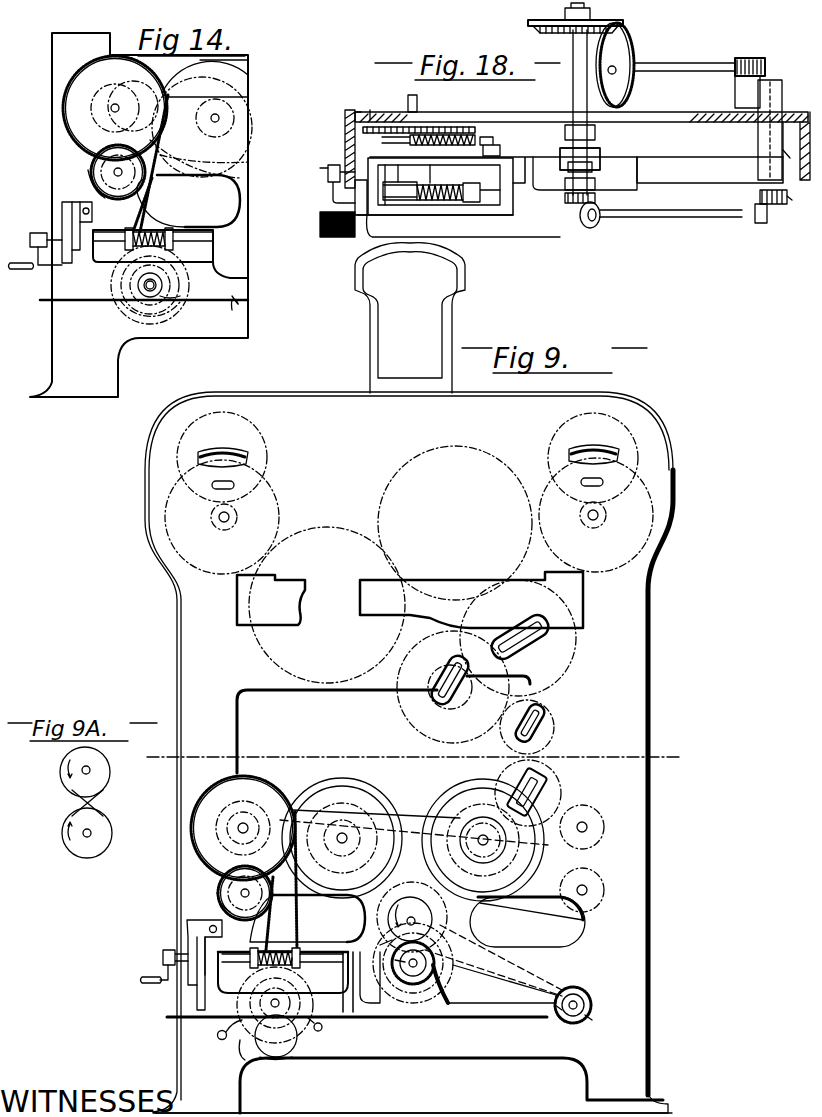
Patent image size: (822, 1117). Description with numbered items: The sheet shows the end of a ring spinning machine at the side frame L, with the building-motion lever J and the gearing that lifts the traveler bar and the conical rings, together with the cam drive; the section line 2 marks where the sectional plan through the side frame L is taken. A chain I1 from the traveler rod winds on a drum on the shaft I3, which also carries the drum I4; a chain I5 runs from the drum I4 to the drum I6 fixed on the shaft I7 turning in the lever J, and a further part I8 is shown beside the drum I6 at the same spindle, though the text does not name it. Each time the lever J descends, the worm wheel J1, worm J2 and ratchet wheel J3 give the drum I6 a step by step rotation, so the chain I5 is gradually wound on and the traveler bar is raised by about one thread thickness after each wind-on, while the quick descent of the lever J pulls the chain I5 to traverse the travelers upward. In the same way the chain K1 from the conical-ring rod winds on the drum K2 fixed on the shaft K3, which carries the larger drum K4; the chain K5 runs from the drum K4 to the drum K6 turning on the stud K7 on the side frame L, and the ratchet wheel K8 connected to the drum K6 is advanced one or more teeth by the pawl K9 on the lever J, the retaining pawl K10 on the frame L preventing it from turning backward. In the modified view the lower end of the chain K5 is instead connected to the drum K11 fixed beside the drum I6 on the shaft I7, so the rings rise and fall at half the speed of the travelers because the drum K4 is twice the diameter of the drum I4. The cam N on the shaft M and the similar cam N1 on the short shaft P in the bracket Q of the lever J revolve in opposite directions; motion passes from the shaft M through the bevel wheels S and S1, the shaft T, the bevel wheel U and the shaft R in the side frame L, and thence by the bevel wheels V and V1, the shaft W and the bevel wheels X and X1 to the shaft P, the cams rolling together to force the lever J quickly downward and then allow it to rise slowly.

In FIG. 14, the side frame L is at (139, 215).
In FIG. 9, the side frame L is at (409, 678).
In FIG. 9, the section line 2— 2 is at (412, 758).
In FIG. 14, the drum K4 is at (128, 75).
In FIG. 18, the drum K4 is at (372, 112).
In FIG. 9, the drum K4 is at (262, 782).
In FIG. 14, the drum K2 is at (110, 95).
In FIG. 9, the drum K2 is at (228, 818).
In FIG. 14, the shaft K3 is at (111, 108).
In FIG. 18, the shaft K3 is at (418, 98).
In FIG. 9, the shaft K3 is at (238, 832).
In FIG. 14, the shaft I3 is at (118, 172).
In FIG. 9, the shaft I3 is at (245, 893).
In FIG. 14, the drum I4 is at (92, 174).
In FIG. 9, the drum I4 is at (218, 895).
In FIG. 14, the chain K5 is at (160, 180).
In FIG. 9, the chain K5 is at (300, 917).
In FIG. 14, the chain I5 is at (148, 229).
In FIG. 9, the chain I5 is at (278, 945).
In FIG. 14, the worm J2 is at (172, 228).
In FIG. 18, the worm J2 is at (462, 185).
In FIG. 9, the worm J2 is at (282, 948).
In FIG. 14, the ratchet wheel J3 is at (66, 222).
In FIG. 9, the ratchet wheel J3 is at (186, 936).
In FIG. 18, the worm wheel J1 is at (481, 186).
In FIG. 9, the worm wheel J1 is at (246, 990).
In FIG. 14, the building-motion lever J is at (80, 300).
In FIG. 18, the building-motion lever J is at (577, 149).
In FIG. 9, the building-motion lever J is at (367, 1020).
In FIG. 14, the chain I1 is at (138, 280).
In FIG. 18, the drum I6 is at (440, 186).
In FIG. 9, the drum I6 is at (282, 985).
In FIG. 14, the shaft I7 is at (156, 285).
In FIG. 9, the shaft I7 is at (280, 1003).
In FIG. 14, the flange I8 is at (180, 300).
In FIG. 9, the chain K1 is at (276, 1036).
In FIG. 9, the drum K6 is at (232, 1056).
In FIG. 18, the stud K7 is at (448, 122).
In FIG. 18, the ratchet wheel K8 is at (428, 147).
In FIG. 9, the ratchet wheel K8 is at (295, 1060).
In FIG. 18, the pawl K9 is at (494, 138).
In FIG. 9, the pawl K9 is at (322, 1030).
In FIG. 18, the retaining pawl K10 is at (382, 140).
In FIG. 9, the retaining pawl K10 is at (222, 1040).
In FIG. 14, the drum K11 is at (128, 306).
In FIG. 18, the bevel wheel S is at (612, 16).
In FIG. 18, the bevel wheel S1 is at (630, 35).
In FIG. 9, the bevel wheel S1 is at (428, 880).
In FIG. 18, the shaft T is at (670, 60).
In FIG. 9, the shaft T is at (503, 960).
In FIG. 18, the bevel wheel U is at (767, 64).
In FIG. 18, the bevel wheel V is at (794, 199).
In FIG. 9, the bevel wheel V is at (593, 1024).
In FIG. 18, the bevel wheel V1 is at (782, 84).
In FIG. 9, the bevel wheel V1 is at (551, 1019).
In FIG. 18, the shaft M is at (572, 86).
In FIG. 9A, the shaft M is at (90, 770).
In FIG. 9, the shaft M is at (412, 917).
In FIG. 18, the cam N is at (598, 152).
In FIG. 9A, the cam N is at (85, 772).
In FIG. 9, the cam N is at (403, 921).
In FIG. 9A, the cam N1 is at (87, 833).
In FIG. 9, the cam N1 is at (388, 964).
In FIG. 18, the shaft P is at (593, 168).
In FIG. 9A, the shaft P is at (91, 833).
In FIG. 9, the shaft P is at (412, 985).
In FIG. 18, the bracket Q is at (560, 192).
In FIG. 9, the bracket Q is at (436, 987).
In FIG. 18, the shaft R is at (791, 155).
In FIG. 9, the shaft R is at (591, 1003).
In FIG. 18, the shaft W is at (668, 208).
In FIG. 9, the shaft W is at (472, 990).
In FIG. 18, the bevel wheel X is at (585, 226).
In FIG. 18, the bevel wheel X1 is at (572, 205).